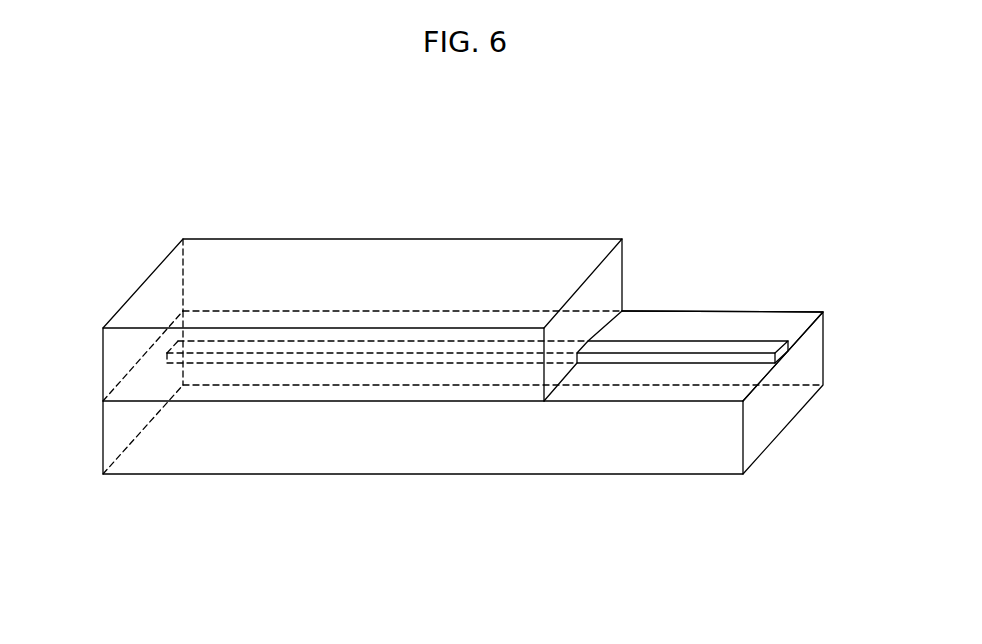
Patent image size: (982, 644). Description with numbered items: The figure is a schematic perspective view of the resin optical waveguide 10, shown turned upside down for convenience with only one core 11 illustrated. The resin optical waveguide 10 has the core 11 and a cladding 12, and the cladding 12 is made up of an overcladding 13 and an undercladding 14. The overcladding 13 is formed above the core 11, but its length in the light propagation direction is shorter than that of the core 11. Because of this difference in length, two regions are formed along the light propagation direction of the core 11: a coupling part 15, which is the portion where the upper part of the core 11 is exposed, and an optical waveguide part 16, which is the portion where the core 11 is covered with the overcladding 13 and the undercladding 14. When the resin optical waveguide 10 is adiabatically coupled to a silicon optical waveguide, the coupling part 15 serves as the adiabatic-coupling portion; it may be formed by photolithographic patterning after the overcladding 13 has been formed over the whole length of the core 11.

The resin optical waveguide 10 is at (782, 178).
The core 11 is at (640, 345).
The cladding 12 is at (118, 362).
The overcladding 13 is at (503, 256).
The undercladding 14 is at (770, 325).
The coupling part 15 is at (719, 298).
The optical waveguide part 16 is at (449, 216).